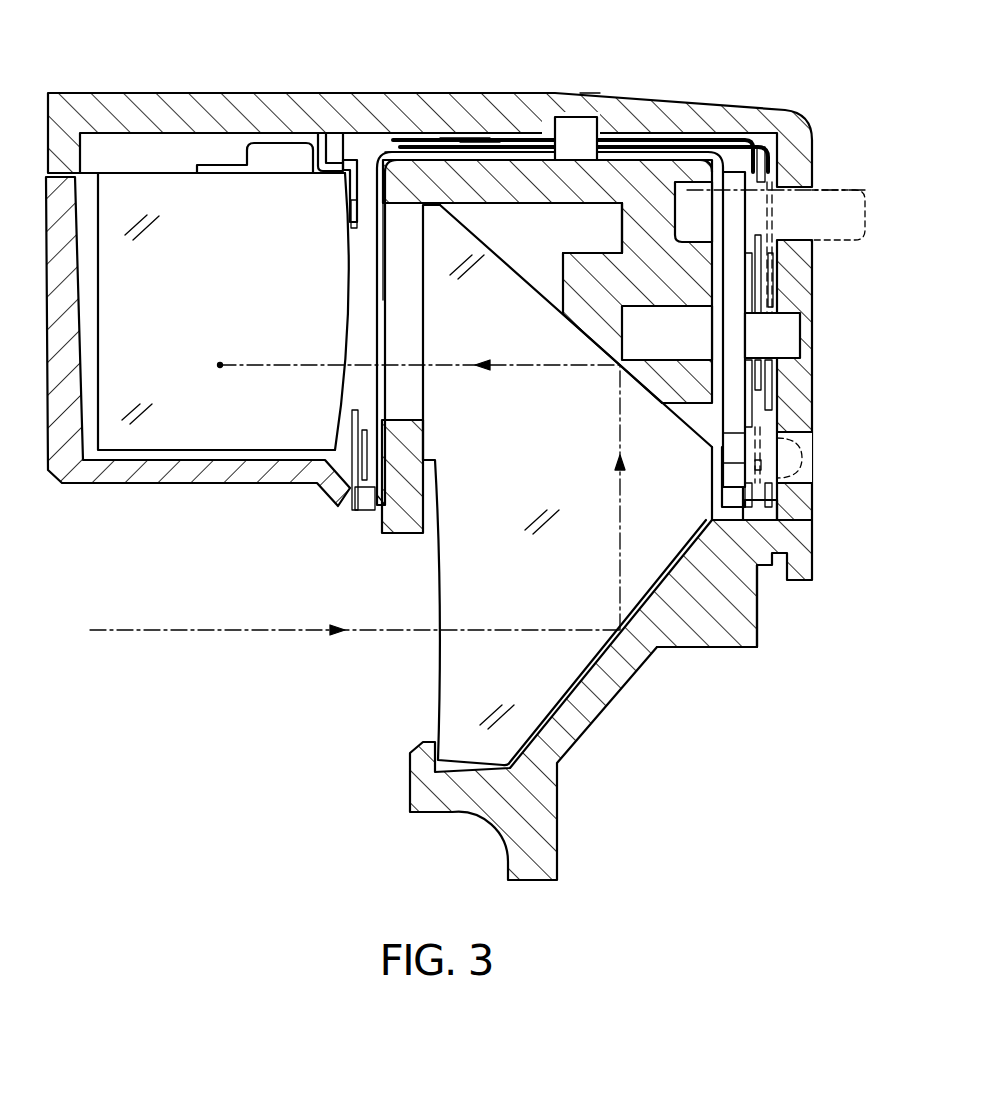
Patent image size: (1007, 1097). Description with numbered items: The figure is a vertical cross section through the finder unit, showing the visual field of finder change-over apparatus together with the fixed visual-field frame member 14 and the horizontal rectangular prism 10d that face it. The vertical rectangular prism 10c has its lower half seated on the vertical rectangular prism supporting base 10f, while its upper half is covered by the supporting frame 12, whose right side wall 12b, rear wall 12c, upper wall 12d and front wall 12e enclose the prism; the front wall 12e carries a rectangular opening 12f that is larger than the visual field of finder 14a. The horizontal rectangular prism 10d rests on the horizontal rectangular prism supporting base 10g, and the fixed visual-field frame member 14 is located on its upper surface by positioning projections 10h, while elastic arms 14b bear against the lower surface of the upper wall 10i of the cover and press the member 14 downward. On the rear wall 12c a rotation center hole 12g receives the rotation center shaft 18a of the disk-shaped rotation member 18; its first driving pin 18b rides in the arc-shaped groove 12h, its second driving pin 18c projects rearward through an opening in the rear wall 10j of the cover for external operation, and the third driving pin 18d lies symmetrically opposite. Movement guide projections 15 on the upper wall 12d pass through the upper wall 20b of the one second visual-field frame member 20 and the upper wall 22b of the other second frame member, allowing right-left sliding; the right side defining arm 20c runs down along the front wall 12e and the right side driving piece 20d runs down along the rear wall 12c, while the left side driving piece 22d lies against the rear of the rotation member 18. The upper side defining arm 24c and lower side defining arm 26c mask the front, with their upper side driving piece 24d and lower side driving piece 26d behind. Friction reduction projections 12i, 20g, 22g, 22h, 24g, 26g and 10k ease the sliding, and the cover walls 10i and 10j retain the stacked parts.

The vertical rectangular prism 10c is at (592, 668).
The horizontal rectangular prism 10d is at (193, 440).
The vertical rectangular prism supporting base 10f is at (740, 637).
The horizontal rectangular prism supporting base 10g is at (85, 472).
The positioning projections 10h is at (278, 155).
The upper wall of cover 10i is at (177, 110).
The rear wall of cover 10j is at (805, 402).
The friction reduction projections 10k is at (588, 118).
The supporting frame 12 is at (657, 186).
The right side wall 12b is at (425, 522).
The rear wall 12c is at (622, 213).
The upper wall 12d is at (540, 150).
The front wall 12e is at (425, 440).
The rectangular opening 12f is at (385, 268).
The rotation center hole 12g is at (660, 355).
The arc-shaped groove 12h is at (667, 333).
The friction reduction projections 12i is at (576, 326).
The fixed visual-field frame member 14 is at (340, 202).
The visual field of finder 14a is at (355, 228).
The elastic arms 14b is at (330, 140).
The movement guide projections 15 is at (582, 152).
The rotation member 18 is at (737, 168).
The rotation center shaft 18a is at (790, 338).
The first driving pin 18b is at (712, 200).
The second driving pin 18c is at (858, 190).
The third driving pin 18d is at (805, 460).
The one second visual-field frame member 20 is at (390, 320).
The upper wall 20b is at (400, 150).
The visual field frame right side defining arm 20c is at (388, 390).
The visual field frame right side driving piece 20d is at (622, 240).
The friction reduction projections 20g is at (378, 308).
The upper wall 22b is at (478, 140).
The visual field frame left side driving piece 22d is at (712, 510).
The friction reduction projections 22g is at (528, 136).
The friction reduction projections 22h is at (465, 136).
The visual field frame upper side defining arm 24c is at (400, 147).
The visual field frame upper side driving piece 24d is at (790, 135).
The friction reduction projections 24g is at (408, 147).
The visual field frame lower side defining arm 26c is at (355, 503).
The visual field frame lower side driving piece 26d is at (790, 300).
The friction reduction projections 26g is at (363, 405).